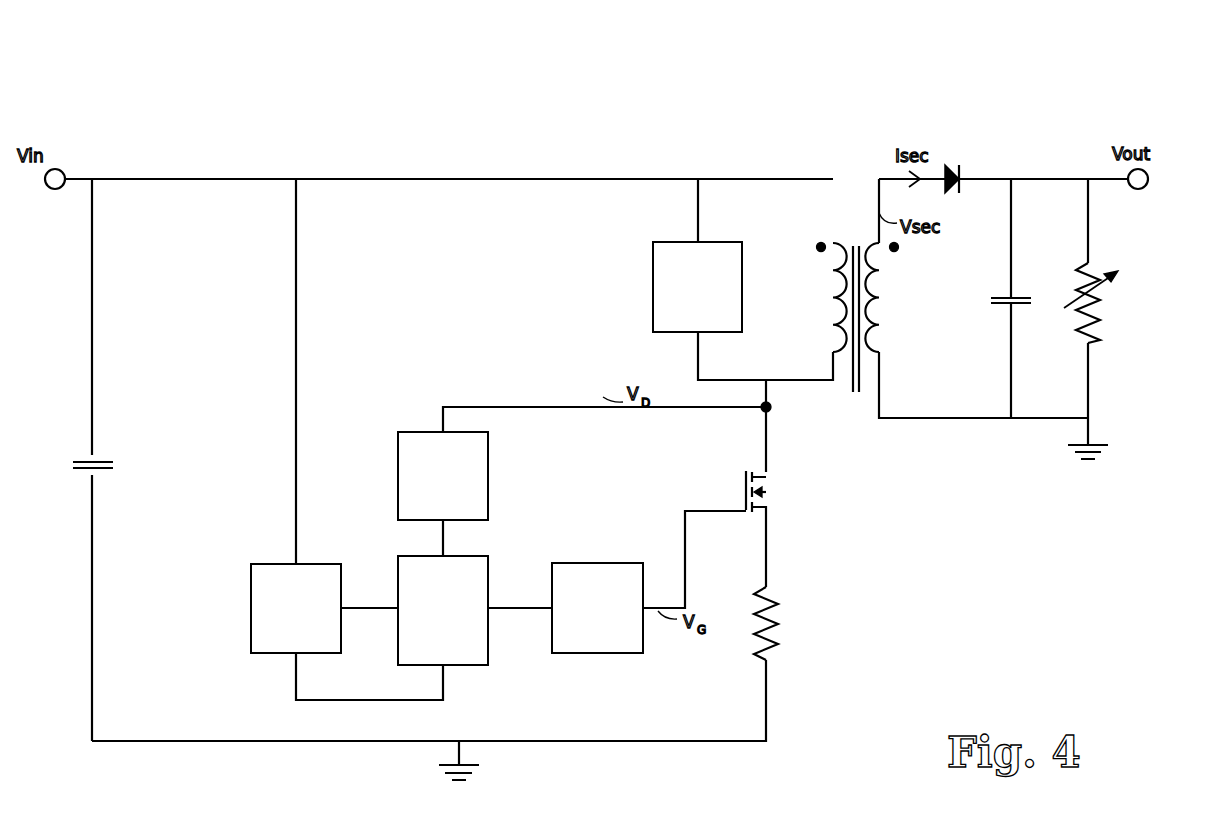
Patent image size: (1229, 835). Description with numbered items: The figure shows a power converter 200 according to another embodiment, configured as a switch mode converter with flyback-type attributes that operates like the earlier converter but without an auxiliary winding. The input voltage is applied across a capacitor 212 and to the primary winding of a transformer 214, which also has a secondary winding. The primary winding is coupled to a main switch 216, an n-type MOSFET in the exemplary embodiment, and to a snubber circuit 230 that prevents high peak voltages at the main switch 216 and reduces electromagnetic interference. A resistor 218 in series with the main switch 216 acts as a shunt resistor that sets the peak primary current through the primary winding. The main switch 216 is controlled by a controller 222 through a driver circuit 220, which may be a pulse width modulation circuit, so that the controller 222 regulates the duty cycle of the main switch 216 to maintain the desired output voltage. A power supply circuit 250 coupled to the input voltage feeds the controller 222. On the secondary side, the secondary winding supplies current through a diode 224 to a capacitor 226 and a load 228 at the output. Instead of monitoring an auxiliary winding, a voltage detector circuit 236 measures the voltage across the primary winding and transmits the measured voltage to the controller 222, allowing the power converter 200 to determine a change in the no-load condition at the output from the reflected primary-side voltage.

The power converter 200 is at (945, 90).
The capacitor 212 is at (73, 459).
The transformer 214 is at (850, 207).
The main switch 216 is at (768, 493).
The resistor 218 is at (776, 609).
The driver circuit 220 is at (645, 655).
The controller 222 is at (491, 664).
The diode 224 is at (965, 164).
The capacitor 226 is at (1023, 294).
The load 228 is at (1100, 294).
The snubber circuit 230 is at (651, 331).
The voltage detector circuit 236 is at (397, 509).
The power supply circuit 250 is at (250, 640).